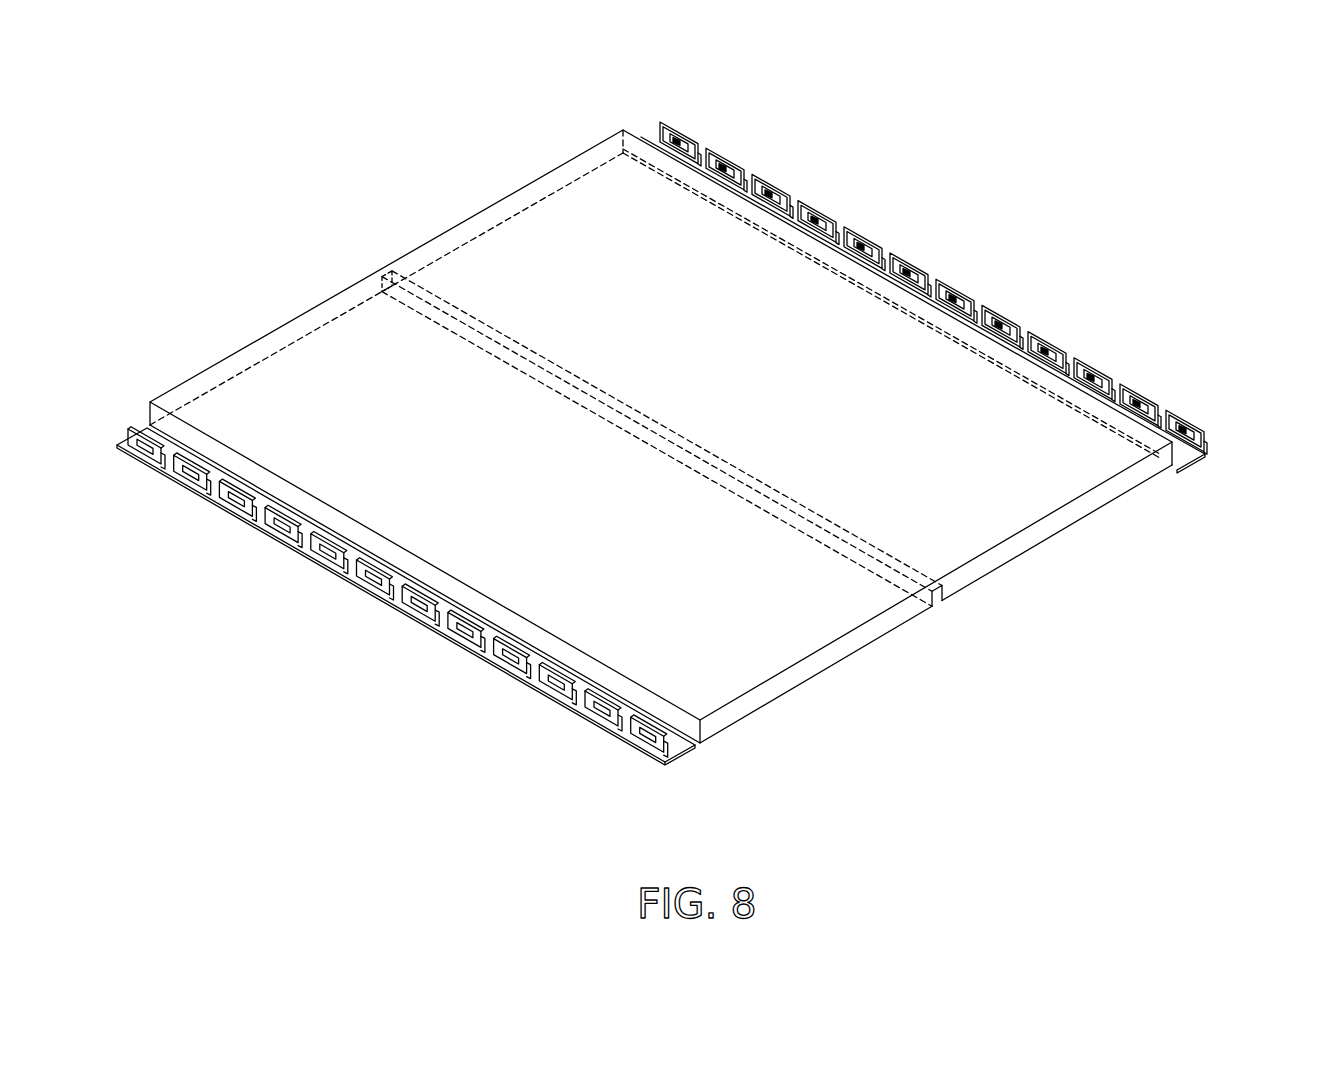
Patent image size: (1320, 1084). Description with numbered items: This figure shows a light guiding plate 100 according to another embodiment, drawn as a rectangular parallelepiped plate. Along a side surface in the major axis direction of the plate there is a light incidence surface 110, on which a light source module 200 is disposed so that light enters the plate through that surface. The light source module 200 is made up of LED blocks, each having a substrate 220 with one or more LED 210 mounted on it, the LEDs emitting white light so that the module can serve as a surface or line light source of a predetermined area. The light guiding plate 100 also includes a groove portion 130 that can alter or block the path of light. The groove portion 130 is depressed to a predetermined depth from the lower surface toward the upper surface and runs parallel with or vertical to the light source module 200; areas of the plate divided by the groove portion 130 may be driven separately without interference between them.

The light guiding plate 100 is at (805, 670).
The light incidence surface 110 is at (693, 733).
The groove portion 130 is at (935, 608).
The light source module 200 is at (690, 478).
The LED 210 is at (1128, 377).
The substrate 220 is at (678, 748).